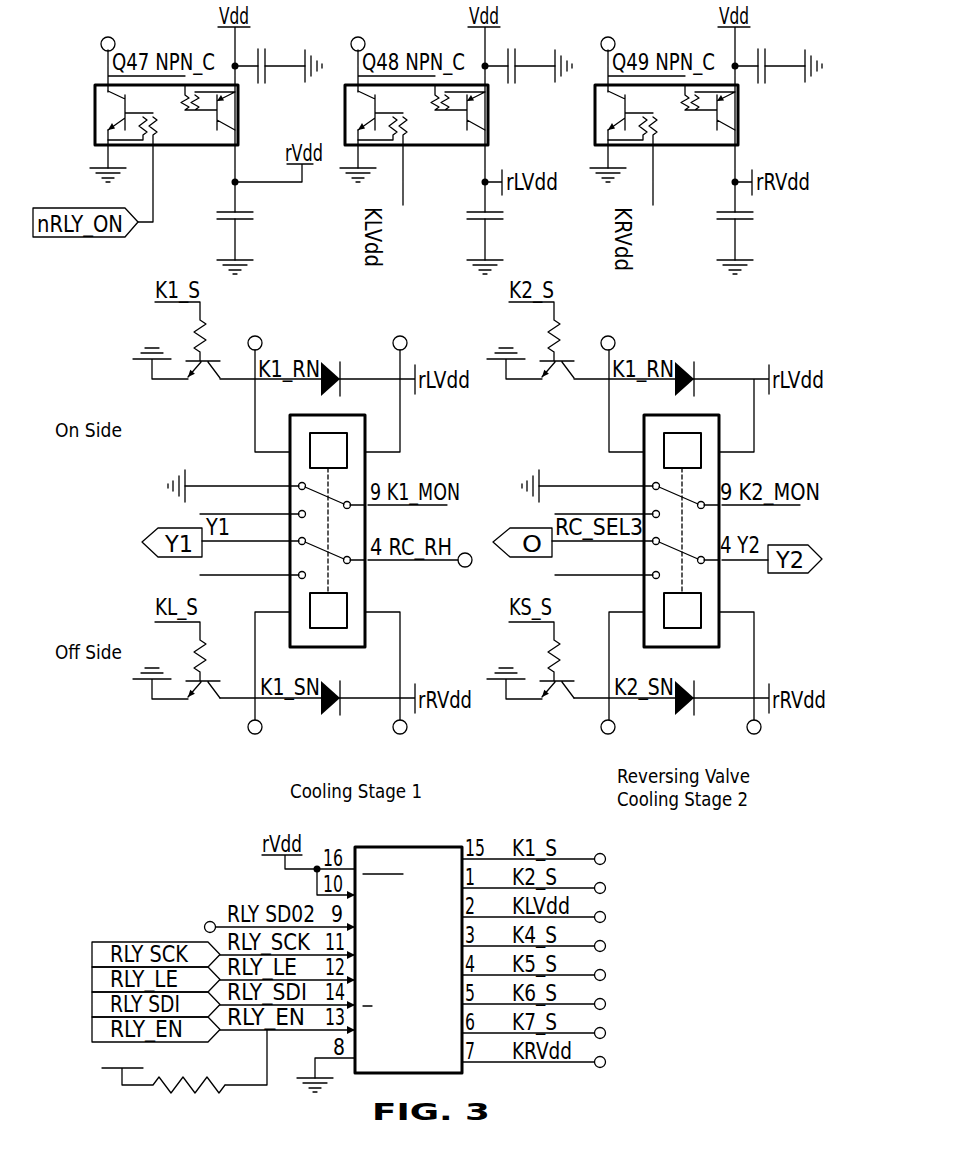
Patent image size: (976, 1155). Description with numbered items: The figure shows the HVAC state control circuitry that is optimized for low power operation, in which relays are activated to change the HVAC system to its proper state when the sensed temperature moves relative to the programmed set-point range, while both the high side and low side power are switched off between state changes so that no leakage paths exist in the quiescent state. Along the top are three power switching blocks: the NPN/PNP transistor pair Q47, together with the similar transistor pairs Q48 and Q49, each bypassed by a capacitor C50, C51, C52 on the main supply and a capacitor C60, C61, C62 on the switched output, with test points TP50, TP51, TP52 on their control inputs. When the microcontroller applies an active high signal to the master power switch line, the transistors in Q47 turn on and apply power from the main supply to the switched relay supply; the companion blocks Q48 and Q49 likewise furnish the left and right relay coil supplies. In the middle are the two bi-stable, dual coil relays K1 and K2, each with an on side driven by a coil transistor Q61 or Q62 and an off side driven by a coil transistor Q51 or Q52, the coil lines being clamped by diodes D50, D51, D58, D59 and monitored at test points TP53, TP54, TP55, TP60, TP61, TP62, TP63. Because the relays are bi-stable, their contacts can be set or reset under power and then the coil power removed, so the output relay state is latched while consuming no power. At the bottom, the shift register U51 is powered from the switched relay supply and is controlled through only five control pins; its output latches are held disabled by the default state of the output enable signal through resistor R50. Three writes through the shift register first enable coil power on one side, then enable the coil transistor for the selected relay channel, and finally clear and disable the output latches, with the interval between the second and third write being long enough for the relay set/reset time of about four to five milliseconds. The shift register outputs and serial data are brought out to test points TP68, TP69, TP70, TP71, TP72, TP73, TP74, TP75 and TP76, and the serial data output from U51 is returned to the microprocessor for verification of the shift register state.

The NPN/PNP transistor pair Q47 is at (209, 115).
The dual NPN transistor PUMD10 Q48 is at (459, 115).
The dual NPN transistor PUMD10 Q49 is at (709, 115).
The 1uF capacitor C50 is at (285, 53).
The 1uF capacitor C51 is at (535, 53).
The 1uF capacitor C52 is at (785, 53).
The 0.1uF 50V capacitor C60 is at (259, 237).
The 1uF capacitor C61 is at (502, 226).
The 1uF capacitor C62 is at (752, 226).
The test point TP50 is at (108, 32).
The test point TP51 is at (358, 32).
The test point TP52 is at (608, 32).
The test point TP53 is at (254, 331).
The test point TP54 is at (402, 331).
The test point TP55 is at (607, 331).
The test point TP60 is at (464, 574).
The test point TP61 is at (398, 744).
The test point TP62 is at (240, 765).
The test point TP63 is at (596, 764).
The test point TP68 is at (627, 859).
The test point TP69 is at (627, 888).
The test point TP70 is at (181, 928).
The test point TP71 is at (627, 917).
The test point TP72 is at (627, 946).
The test point TP73 is at (627, 975).
The test point TP74 is at (627, 1004).
The test point TP75 is at (627, 1033).
The test point TP76 is at (627, 1062).
The diode BAV20W D50 is at (330, 348).
The diode BAV20W D51 is at (684, 348).
The diode BAV20W D58 is at (329, 724).
The diode BAV20W D59 is at (683, 724).
The latching relay V23079-B1211-B301 (cooling stage 1) K1 is at (330, 529).
The latching relay V23079-B1211-B301 (reversing valve / cooling stage 2) K2 is at (684, 529).
The digital transistor DDTC113TCA (on side driver) Q61 is at (183, 367).
The digital transistor DDTC113TCA (on side driver) Q62 is at (537, 367).
The digital transistor DDTC113TCA (off side driver) Q51 is at (176, 686).
The digital transistor DDTC113TCA (off side driver) Q52 is at (531, 686).
The shift register U51 is at (408, 948).
The resistor R50 is at (184, 1075).